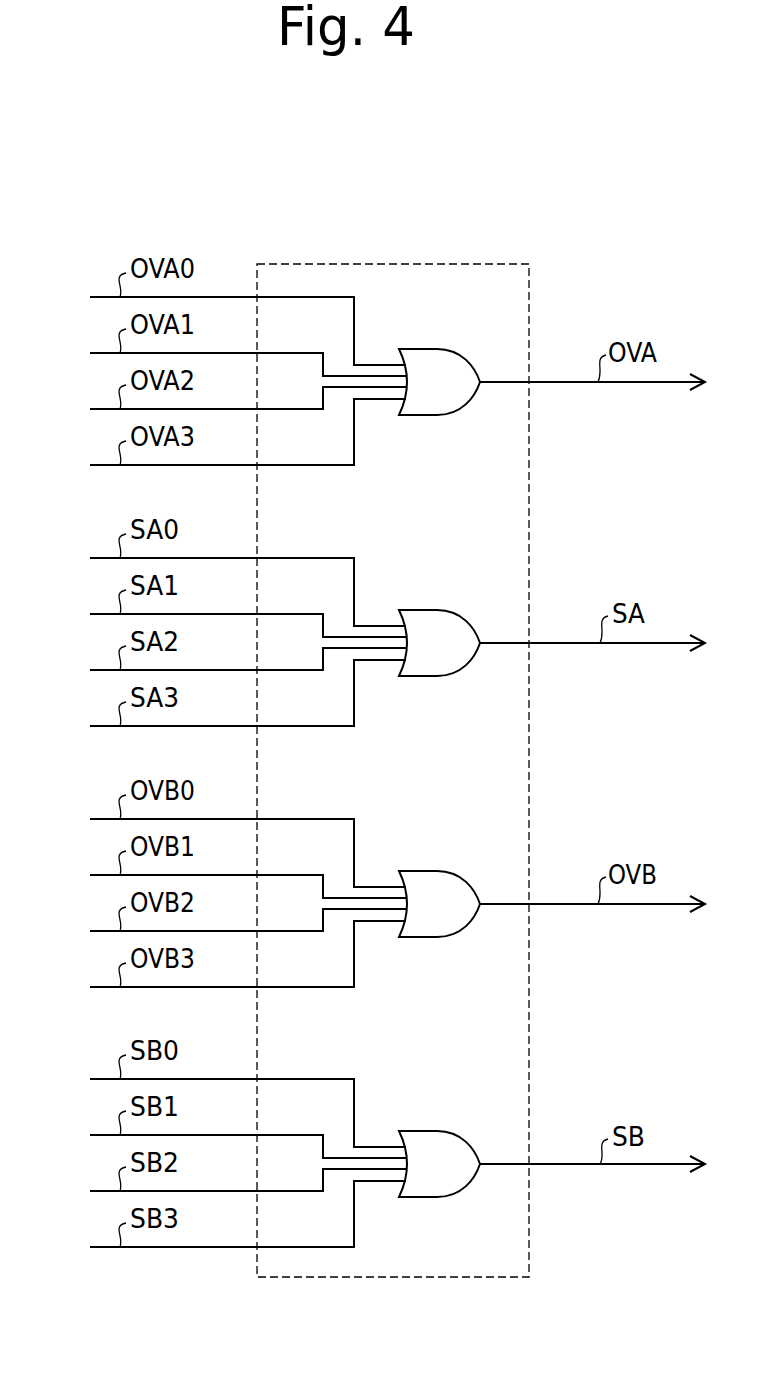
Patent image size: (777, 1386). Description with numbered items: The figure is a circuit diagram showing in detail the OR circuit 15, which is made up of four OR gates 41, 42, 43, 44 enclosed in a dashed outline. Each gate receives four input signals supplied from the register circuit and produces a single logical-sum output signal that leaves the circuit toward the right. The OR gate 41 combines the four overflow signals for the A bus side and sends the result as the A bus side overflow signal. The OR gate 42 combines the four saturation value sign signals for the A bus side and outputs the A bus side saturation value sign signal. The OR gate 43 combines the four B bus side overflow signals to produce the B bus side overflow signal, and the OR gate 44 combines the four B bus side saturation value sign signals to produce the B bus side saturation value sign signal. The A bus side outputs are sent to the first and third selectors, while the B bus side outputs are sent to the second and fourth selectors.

The OR circuit 15 is at (470, 262).
The OR gate 41 is at (448, 350).
The OR gate 42 is at (448, 611).
The OR gate 43 is at (448, 872).
The OR gate 44 is at (448, 1132).